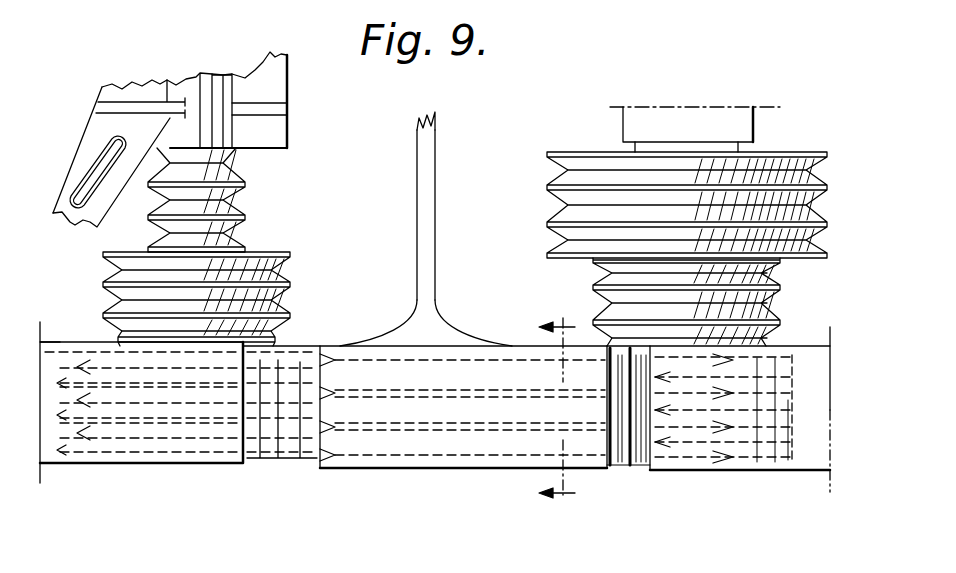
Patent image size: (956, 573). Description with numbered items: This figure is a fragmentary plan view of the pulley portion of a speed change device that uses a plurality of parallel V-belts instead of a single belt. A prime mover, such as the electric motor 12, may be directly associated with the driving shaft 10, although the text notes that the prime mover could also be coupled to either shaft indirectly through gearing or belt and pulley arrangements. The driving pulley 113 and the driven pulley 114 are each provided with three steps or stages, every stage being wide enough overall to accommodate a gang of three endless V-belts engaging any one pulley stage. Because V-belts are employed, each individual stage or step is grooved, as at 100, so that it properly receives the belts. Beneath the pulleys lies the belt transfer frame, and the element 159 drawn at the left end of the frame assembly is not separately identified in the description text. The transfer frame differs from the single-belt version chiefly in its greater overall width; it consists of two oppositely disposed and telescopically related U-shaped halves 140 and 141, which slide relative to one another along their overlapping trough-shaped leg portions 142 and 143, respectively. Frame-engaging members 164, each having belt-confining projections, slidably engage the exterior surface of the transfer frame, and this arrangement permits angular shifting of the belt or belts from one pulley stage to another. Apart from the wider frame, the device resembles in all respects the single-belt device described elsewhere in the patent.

The driving shaft 10 is at (536, 412).
The electric motor 12 is at (768, 107).
The grooves 100 is at (243, 229).
The driving pulley 113 is at (590, 259).
The driven pulley 114 is at (282, 253).
The U-shaped half 140 is at (798, 377).
The U-shaped half 141 is at (45, 342).
The trough-shaped leg portion 142 is at (637, 462).
The trough-shaped leg portion 143 is at (290, 452).
The left block 159 is at (210, 460).
The frame-engaging member 164 is at (410, 458).